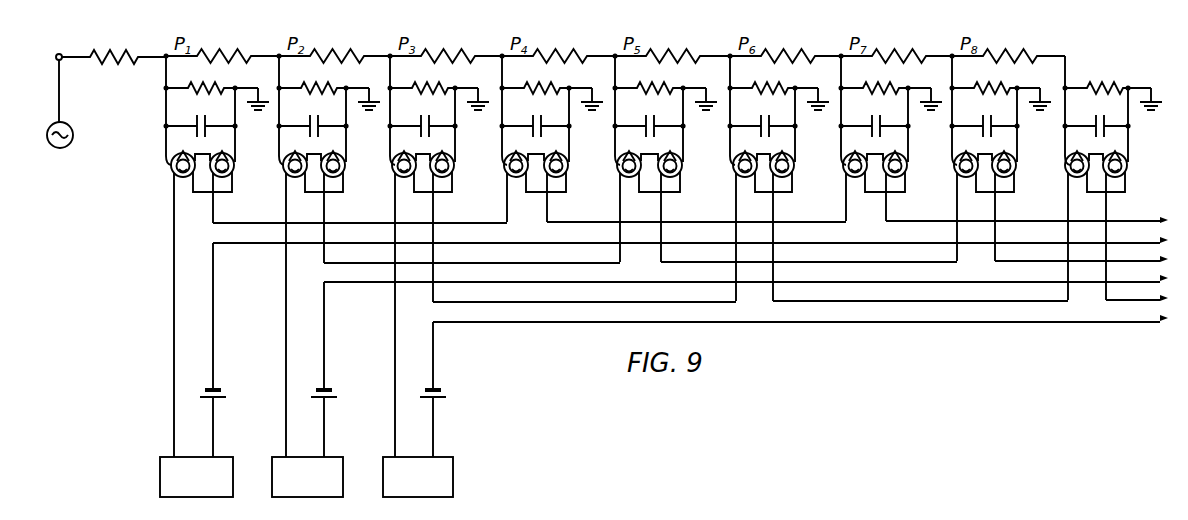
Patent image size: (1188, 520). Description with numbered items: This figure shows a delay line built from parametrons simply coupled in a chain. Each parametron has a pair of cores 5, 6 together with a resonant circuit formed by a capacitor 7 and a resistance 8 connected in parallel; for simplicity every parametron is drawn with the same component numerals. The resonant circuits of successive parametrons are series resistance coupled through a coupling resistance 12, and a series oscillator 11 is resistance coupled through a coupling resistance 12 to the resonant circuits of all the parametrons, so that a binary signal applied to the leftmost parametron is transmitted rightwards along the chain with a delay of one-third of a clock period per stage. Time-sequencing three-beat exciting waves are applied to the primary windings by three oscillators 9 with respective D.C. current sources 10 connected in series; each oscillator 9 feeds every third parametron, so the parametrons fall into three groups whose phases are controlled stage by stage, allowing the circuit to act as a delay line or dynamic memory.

The series oscillator 11 is at (73, 132).
The coupling resistance 12 is at (1038, 57).
The resistance 8 is at (1096, 87).
The capacitor 7 is at (1104, 120).
The core 5 is at (1069, 171).
The core 6 is at (1135, 174).
The D.C. current source 10 is at (439, 389).
The oscillator 9 is at (426, 507).